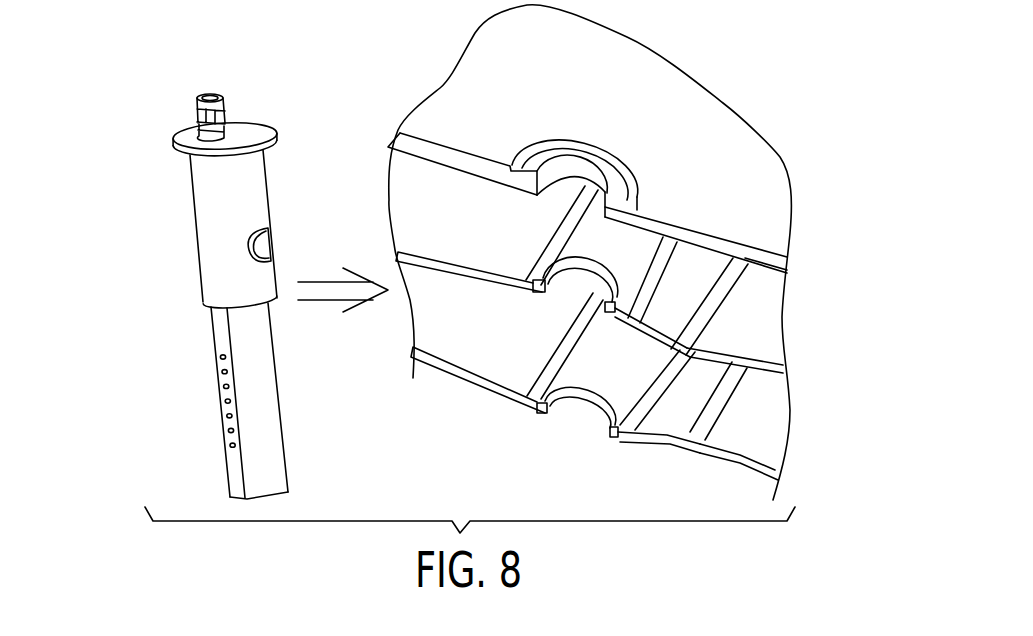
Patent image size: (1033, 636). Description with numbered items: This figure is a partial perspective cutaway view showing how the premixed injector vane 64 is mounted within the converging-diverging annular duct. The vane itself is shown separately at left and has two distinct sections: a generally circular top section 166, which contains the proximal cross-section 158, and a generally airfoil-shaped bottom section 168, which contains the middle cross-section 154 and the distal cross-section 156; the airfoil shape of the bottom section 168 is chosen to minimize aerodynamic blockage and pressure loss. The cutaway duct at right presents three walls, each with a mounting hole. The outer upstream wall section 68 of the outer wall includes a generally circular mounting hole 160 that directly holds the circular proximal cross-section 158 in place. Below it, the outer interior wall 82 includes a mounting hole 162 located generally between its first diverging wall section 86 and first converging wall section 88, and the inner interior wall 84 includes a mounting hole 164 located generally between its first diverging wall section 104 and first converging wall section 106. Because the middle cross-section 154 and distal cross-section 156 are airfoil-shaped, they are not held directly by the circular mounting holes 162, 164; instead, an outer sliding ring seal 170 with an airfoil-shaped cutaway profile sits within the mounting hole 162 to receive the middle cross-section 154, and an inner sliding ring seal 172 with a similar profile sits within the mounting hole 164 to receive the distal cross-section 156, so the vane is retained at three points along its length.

The premixed injector vane 64 is at (266, 87).
The proximal cross-section 158 is at (140, 145).
The generally circular top section 166 is at (288, 189).
The middle cross-section 154 is at (167, 312).
The distal cross-section 156 is at (204, 494).
The generally airfoil-shaped bottom section 168 is at (302, 410).
The outer upstream wall section 68 is at (455, 147).
The mounting hole 160 is at (562, 153).
The mounting hole 162 is at (553, 262).
The outer sliding ring seal 170 is at (593, 278).
The mounting hole 164 is at (567, 392).
The inner sliding ring seal 172 is at (598, 407).
The first diverging wall section 86 is at (463, 273).
The first converging wall section 88 is at (647, 328).
The outer interior wall 82 is at (745, 358).
The first diverging wall section 104 is at (467, 378).
The first converging wall section 106 is at (638, 437).
The inner interior wall 84 is at (745, 457).